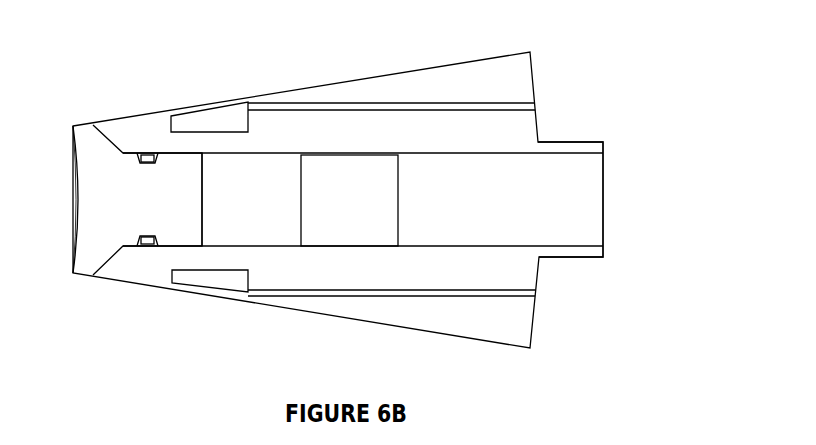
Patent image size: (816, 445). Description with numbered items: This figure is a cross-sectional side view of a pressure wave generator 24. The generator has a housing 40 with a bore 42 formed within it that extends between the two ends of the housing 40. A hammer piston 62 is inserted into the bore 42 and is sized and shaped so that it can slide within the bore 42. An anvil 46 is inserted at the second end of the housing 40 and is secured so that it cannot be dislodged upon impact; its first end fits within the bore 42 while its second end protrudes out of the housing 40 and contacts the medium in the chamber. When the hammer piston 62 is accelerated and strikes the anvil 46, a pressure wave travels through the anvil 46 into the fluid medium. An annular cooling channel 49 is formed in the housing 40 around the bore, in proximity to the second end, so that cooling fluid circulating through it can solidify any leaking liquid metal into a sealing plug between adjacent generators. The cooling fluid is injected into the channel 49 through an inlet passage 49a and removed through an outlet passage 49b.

The pressure wave generator 24 is at (645, 61).
The housing 40 is at (499, 77).
The bore 42 is at (560, 213).
The anvil 46 is at (157, 214).
The annular cooling channel 49 is at (219, 108).
The inlet passage 49a is at (366, 96).
The outlet passage 49b is at (285, 303).
The hammer piston 62 is at (364, 211).